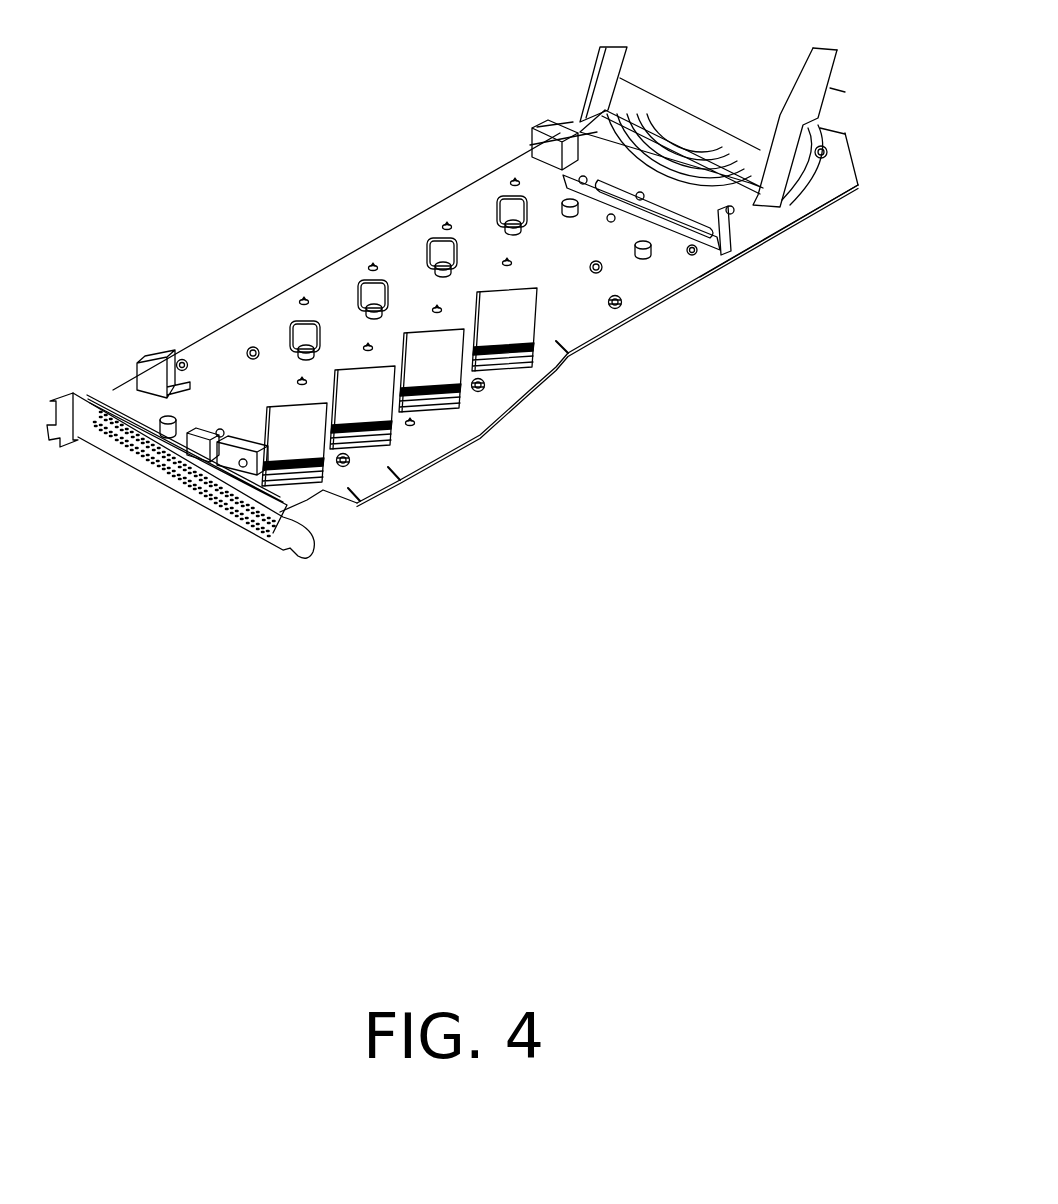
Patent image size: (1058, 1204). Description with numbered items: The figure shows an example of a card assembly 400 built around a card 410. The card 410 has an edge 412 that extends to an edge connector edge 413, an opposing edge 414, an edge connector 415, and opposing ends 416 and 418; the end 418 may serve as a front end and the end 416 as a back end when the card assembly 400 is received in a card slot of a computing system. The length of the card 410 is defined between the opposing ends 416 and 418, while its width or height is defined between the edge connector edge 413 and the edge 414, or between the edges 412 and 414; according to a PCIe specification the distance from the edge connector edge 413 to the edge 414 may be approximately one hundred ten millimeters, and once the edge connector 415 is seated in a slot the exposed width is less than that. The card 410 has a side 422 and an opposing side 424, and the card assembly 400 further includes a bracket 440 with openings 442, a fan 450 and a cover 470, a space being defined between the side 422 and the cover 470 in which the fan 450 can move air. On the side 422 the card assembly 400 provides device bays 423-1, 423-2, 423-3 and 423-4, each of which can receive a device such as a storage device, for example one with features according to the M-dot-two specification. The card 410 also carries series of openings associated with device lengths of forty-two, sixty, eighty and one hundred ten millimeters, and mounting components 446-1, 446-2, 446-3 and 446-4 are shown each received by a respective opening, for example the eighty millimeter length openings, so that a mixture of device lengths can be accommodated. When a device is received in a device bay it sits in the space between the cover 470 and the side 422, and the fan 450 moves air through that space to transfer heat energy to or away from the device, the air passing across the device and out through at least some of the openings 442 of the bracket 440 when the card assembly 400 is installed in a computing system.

The card assembly 400 is at (300, 72).
The card 410 is at (485, 322).
The edge 412 is at (590, 345).
The edge connector edge 413 is at (478, 441).
The opposing edge 414 is at (412, 212).
The edge connector 415 is at (528, 411).
The end 416 is at (98, 368).
The end 418 is at (845, 232).
The side 422 is at (580, 262).
The device bay 423-1 is at (287, 450).
The device bay 423-2 is at (363, 413).
The device bay 423-3 is at (432, 377).
The device bay 423-4 is at (507, 328).
The opposing side 424 is at (700, 312).
The bracket 440 is at (283, 538).
The openings 442 is at (183, 490).
The mounting component 446-1 is at (323, 335).
The mounting component 446-2 is at (391, 291).
The mounting component 446-3 is at (425, 252).
The mounting component 446-4 is at (495, 212).
The fan 450 is at (544, 91).
The cover 470 is at (581, 46).